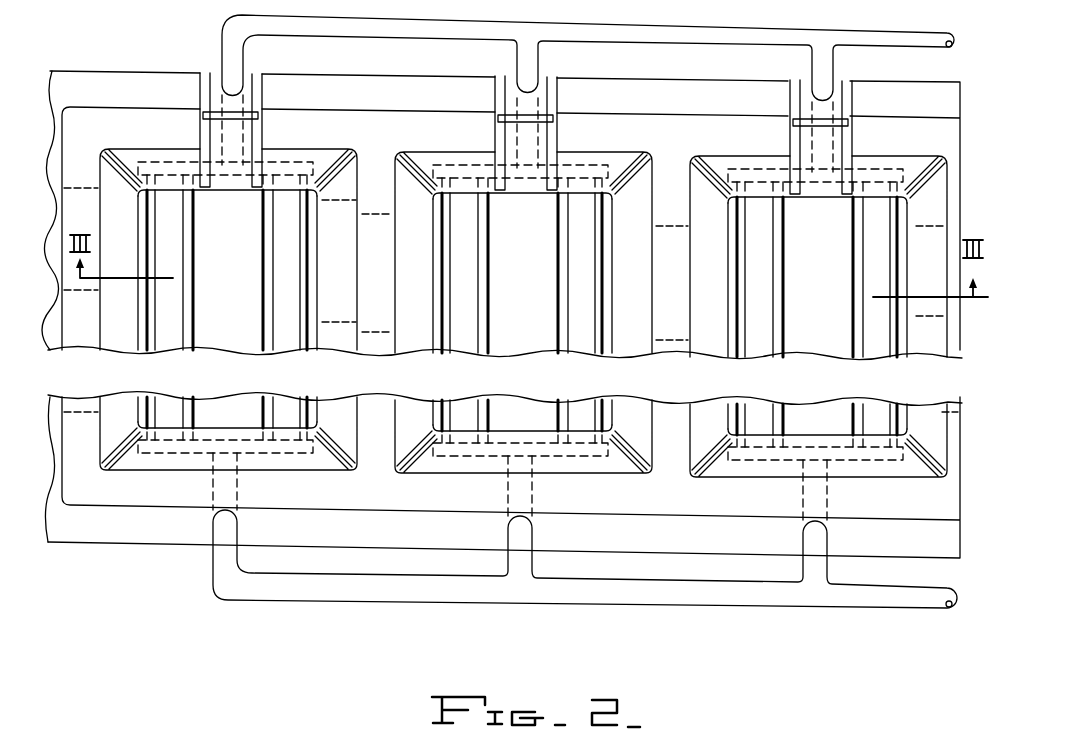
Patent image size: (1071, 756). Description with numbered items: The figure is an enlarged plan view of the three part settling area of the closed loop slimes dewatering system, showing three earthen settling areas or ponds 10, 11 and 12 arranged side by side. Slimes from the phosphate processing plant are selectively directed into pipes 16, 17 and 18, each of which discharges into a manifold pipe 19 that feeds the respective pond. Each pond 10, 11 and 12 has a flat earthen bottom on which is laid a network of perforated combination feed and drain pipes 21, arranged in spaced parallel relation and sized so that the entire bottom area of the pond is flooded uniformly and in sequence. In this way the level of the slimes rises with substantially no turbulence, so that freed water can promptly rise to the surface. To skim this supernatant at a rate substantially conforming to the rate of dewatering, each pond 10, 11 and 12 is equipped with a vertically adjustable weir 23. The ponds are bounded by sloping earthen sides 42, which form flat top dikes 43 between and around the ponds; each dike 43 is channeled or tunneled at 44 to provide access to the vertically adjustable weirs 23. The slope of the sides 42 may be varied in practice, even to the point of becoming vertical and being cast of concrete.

The settling area 10 is at (226, 272).
The settling area 11 is at (511, 278).
The settling area 12 is at (816, 284).
The pipe 16 is at (244, 490).
The pipe 17 is at (536, 496).
The pipe 18 is at (830, 500).
The manifold pipe 19 is at (790, 470).
The perforated combination feed and drain pipes 21 is at (880, 329).
The vertically adjustable weir 23 is at (803, 90).
The sloping earthen sides 42 is at (911, 360).
The flat top dikes 43 is at (952, 355).
The channel 44 is at (846, 92).